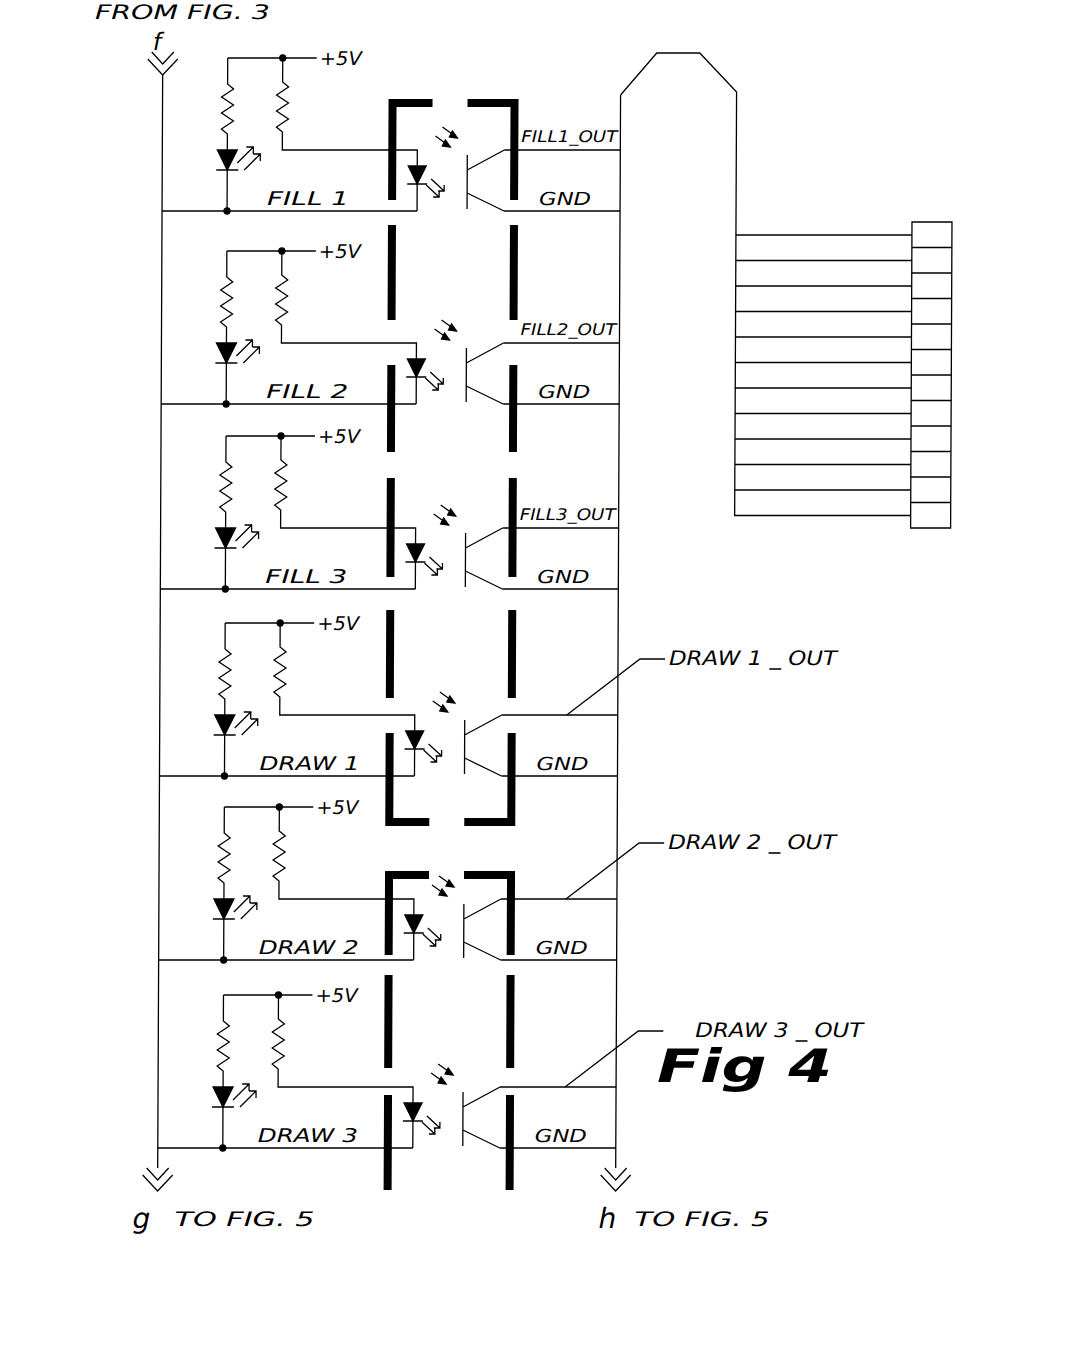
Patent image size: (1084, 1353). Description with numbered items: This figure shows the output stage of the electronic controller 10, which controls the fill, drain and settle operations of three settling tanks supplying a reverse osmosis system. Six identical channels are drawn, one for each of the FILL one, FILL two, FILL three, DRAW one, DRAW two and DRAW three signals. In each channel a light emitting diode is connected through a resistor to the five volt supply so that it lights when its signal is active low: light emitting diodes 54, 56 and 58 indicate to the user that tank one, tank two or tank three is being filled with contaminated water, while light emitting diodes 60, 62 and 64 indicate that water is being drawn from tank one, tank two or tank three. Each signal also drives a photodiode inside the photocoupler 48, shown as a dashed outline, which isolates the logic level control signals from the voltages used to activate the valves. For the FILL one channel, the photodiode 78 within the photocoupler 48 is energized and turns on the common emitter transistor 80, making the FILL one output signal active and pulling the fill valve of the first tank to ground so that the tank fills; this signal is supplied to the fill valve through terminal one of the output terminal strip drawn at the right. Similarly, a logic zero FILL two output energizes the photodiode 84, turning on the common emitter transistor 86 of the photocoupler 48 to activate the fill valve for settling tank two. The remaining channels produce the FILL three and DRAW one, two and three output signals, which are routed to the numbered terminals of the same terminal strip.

The electronic controller 10 is at (748, 77).
The photocoupler 48 is at (521, 100).
The light emitting diode 54 is at (223, 161).
The light emitting diode 56 is at (223, 354).
The light emitting diode 58 is at (223, 539).
The light emitting diode 60 is at (223, 726).
The light emitting diode 62 is at (223, 910).
The light emitting diode 64 is at (223, 1098).
The photodiode 78 is at (428, 190).
The common emitter transistor 80 is at (470, 210).
The photodiode 84 is at (420, 392).
The common emitter transistor 86 is at (468, 396).